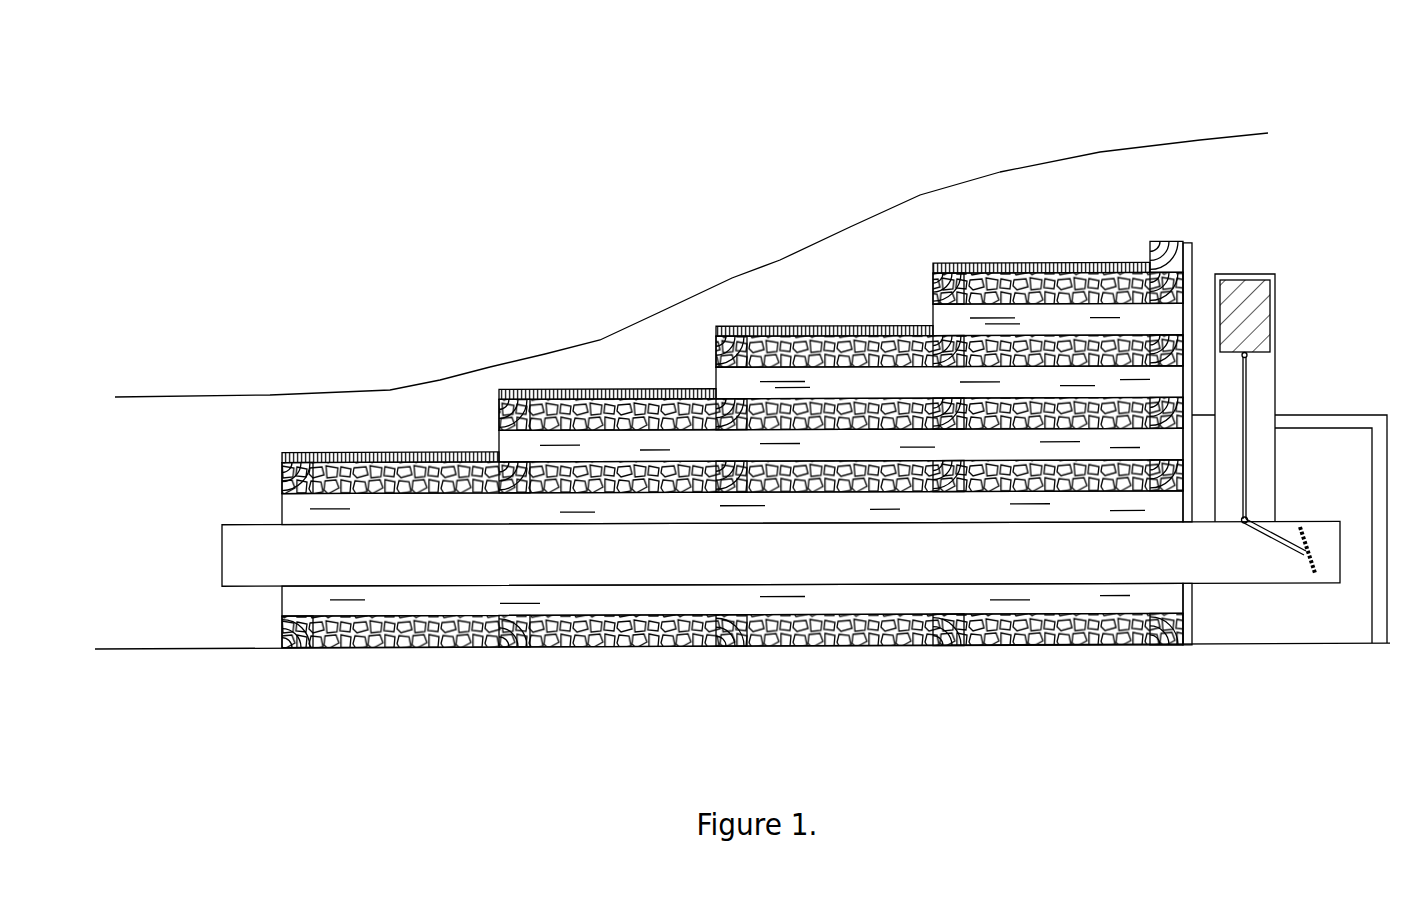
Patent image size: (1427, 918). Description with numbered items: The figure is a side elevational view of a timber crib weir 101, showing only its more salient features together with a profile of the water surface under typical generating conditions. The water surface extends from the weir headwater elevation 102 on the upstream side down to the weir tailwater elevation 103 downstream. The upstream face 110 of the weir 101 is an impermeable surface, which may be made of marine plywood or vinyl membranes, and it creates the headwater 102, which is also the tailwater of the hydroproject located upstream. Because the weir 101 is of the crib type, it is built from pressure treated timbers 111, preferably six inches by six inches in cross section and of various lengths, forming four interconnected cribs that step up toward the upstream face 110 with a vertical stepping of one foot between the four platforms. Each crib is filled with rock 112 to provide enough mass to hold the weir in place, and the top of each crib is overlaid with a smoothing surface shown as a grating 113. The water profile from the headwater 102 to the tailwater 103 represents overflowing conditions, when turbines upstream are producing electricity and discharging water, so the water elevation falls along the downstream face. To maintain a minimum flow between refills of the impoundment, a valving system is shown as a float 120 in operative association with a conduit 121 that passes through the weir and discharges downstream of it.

The timber crib weir 101 is at (720, 243).
The weir headwater elevation 102 is at (1228, 133).
The weir tailwater elevation 103 is at (190, 394).
The upstream face 110 is at (1193, 254).
The pressure treated timbers 111 is at (282, 478).
The rock fill 112 is at (555, 393).
The grating 113 is at (1048, 266).
The float 120 is at (1258, 326).
The conduit 121 is at (1086, 553).